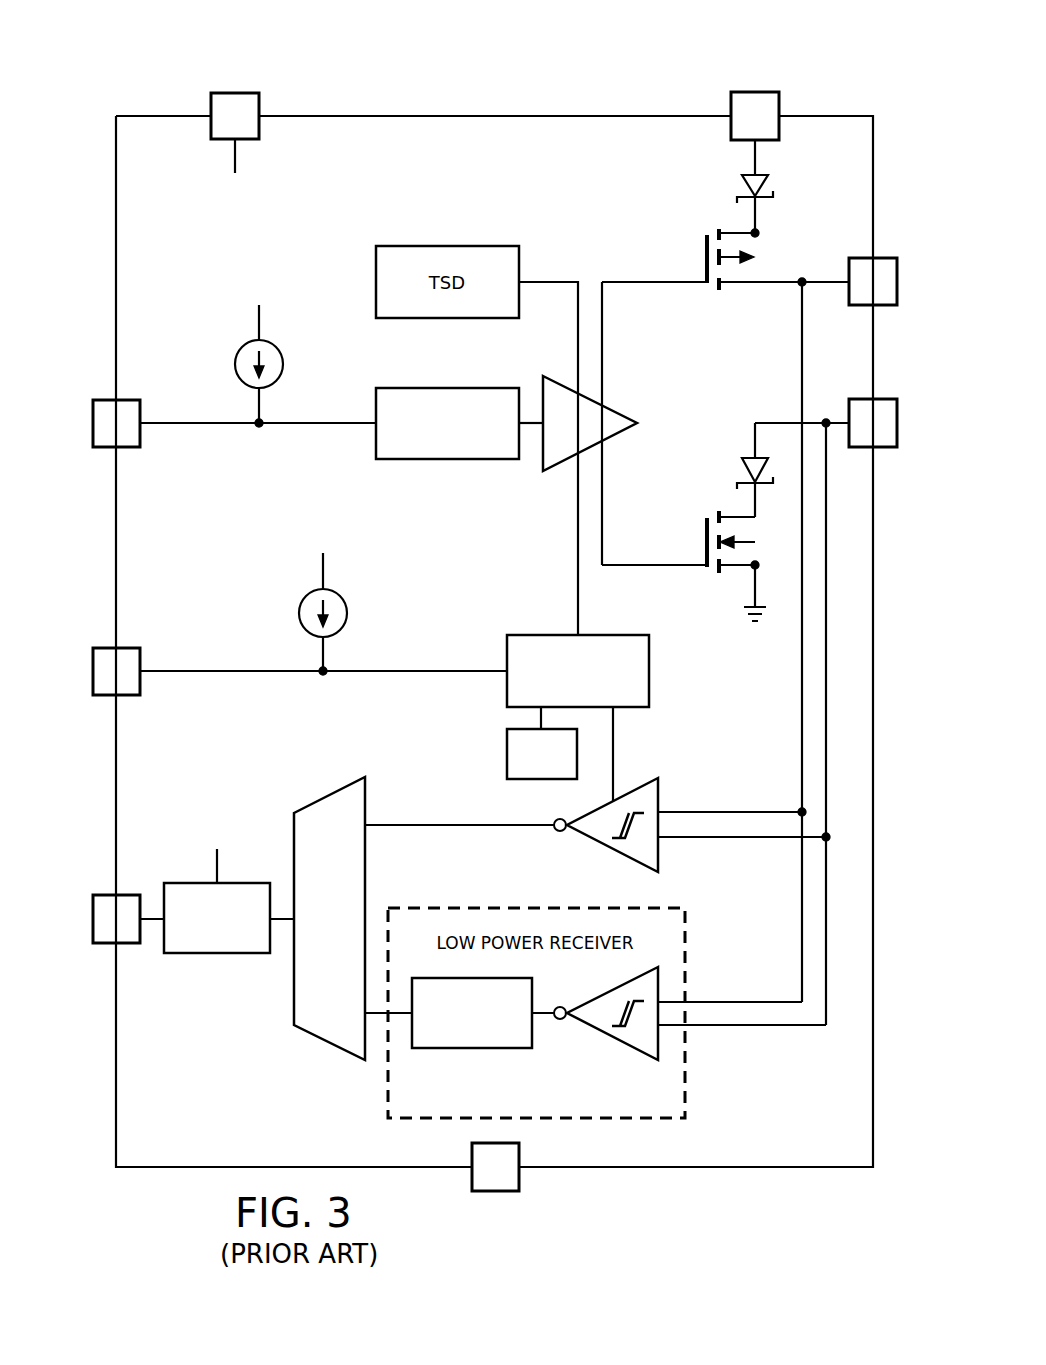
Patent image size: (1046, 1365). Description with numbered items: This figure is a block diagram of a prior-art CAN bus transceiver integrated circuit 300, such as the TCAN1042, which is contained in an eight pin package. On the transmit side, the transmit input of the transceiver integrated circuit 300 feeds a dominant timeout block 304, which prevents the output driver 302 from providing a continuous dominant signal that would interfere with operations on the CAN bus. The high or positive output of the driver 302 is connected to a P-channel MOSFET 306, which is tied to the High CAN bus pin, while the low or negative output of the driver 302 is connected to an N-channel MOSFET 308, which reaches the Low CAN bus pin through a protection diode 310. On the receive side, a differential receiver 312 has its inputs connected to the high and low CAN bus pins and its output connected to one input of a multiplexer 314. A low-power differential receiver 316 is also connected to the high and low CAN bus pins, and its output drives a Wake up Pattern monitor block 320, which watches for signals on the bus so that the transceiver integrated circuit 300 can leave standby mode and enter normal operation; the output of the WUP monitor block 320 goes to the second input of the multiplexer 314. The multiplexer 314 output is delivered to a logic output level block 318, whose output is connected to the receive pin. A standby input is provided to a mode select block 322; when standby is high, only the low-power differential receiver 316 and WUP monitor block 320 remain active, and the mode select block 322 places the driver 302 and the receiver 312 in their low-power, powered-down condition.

The CAN bus transceiver integrated circuit 300 is at (397, 65).
The output driver 302 is at (627, 412).
The dominant timeout block 304 is at (447, 388).
The P-channel MOSFET 306 is at (704, 245).
The N-channel MOSFET 308 is at (705, 530).
The protection diode 310 is at (738, 473).
The differential receiver 312 is at (600, 846).
The multiplexer 314 is at (311, 948).
The low-power differential receiver 316 is at (609, 1037).
The logic output level block 318 is at (205, 955).
The Wake up Pattern (WUP) monitor block 320 is at (471, 1050).
The mode select block 322 is at (651, 684).